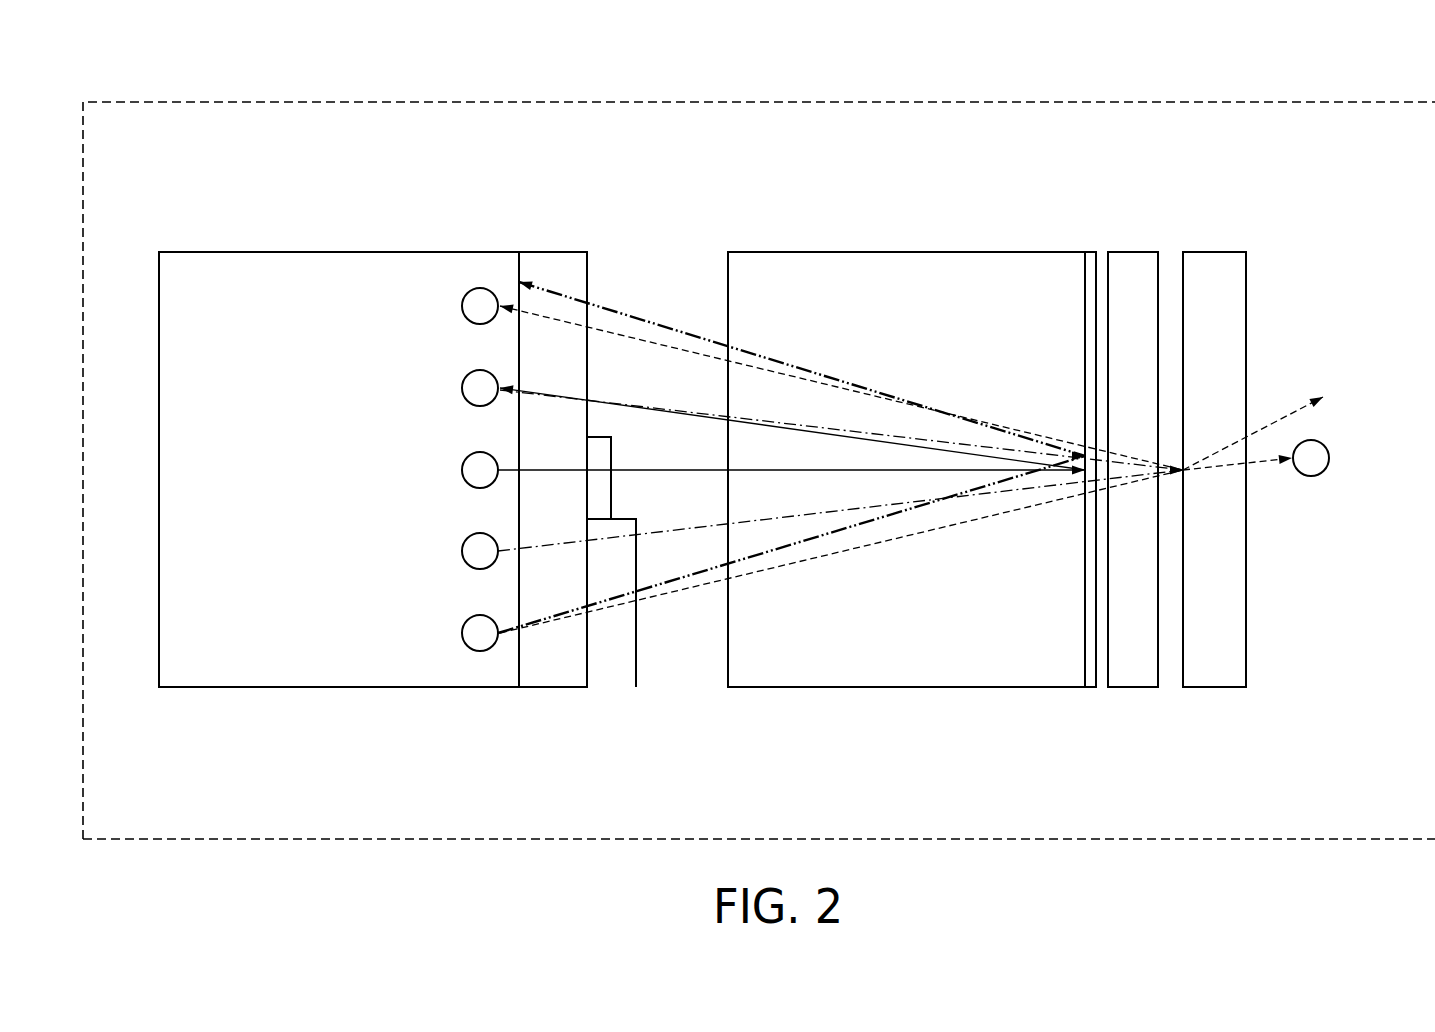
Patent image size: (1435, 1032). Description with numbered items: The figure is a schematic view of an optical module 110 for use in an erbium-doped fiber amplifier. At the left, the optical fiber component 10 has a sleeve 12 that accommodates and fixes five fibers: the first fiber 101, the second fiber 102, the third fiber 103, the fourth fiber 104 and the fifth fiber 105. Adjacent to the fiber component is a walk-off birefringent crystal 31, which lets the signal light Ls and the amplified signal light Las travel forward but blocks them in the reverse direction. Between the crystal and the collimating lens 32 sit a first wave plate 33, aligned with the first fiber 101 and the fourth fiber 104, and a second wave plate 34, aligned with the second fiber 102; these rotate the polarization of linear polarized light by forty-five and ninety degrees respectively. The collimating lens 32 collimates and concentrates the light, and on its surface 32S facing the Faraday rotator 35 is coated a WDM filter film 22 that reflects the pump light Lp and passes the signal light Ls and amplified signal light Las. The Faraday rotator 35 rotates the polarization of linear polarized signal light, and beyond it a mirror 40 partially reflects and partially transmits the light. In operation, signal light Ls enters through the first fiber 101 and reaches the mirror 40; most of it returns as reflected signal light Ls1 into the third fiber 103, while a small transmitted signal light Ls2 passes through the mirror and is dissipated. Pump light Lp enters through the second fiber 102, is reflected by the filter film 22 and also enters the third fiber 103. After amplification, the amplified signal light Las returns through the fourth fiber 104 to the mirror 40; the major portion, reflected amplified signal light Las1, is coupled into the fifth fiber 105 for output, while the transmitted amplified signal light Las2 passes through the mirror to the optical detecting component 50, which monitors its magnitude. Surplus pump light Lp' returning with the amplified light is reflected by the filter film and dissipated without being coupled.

The optical module 110 is at (1382, 101).
The optical fiber component 10 is at (303, 215).
The sleeve 12 is at (411, 252).
The walk-off birefringent crystal 31 is at (553, 252).
The second wave plate 34 is at (612, 444).
The first wave plate 33 is at (610, 688).
The fifth fiber 105 is at (462, 306).
The third fiber 103 is at (462, 388).
The second fiber 102 is at (462, 470).
The first fiber 101 is at (462, 551).
The fourth fiber 104 is at (462, 633).
The collimating lens 32 is at (975, 252).
The surface of the collimating lens 32S is at (1084, 306).
The WDM filter film 22 is at (1092, 252).
The Faraday rotator 35 is at (1134, 252).
The mirror 40 is at (1213, 252).
The optical detecting component 50 is at (1310, 476).
The reflected amplified signal light Las1 is at (652, 345).
The amplified signal light Las is at (833, 555).
The pump light Lp is at (841, 469).
The surplus pump light Lp' is at (1015, 469).
The signal light Ls is at (747, 522).
The reflected signal light Ls1 is at (908, 435).
The transmitted signal light Ls2 is at (1283, 415).
The transmitted amplified signal light Las2 is at (1218, 466).